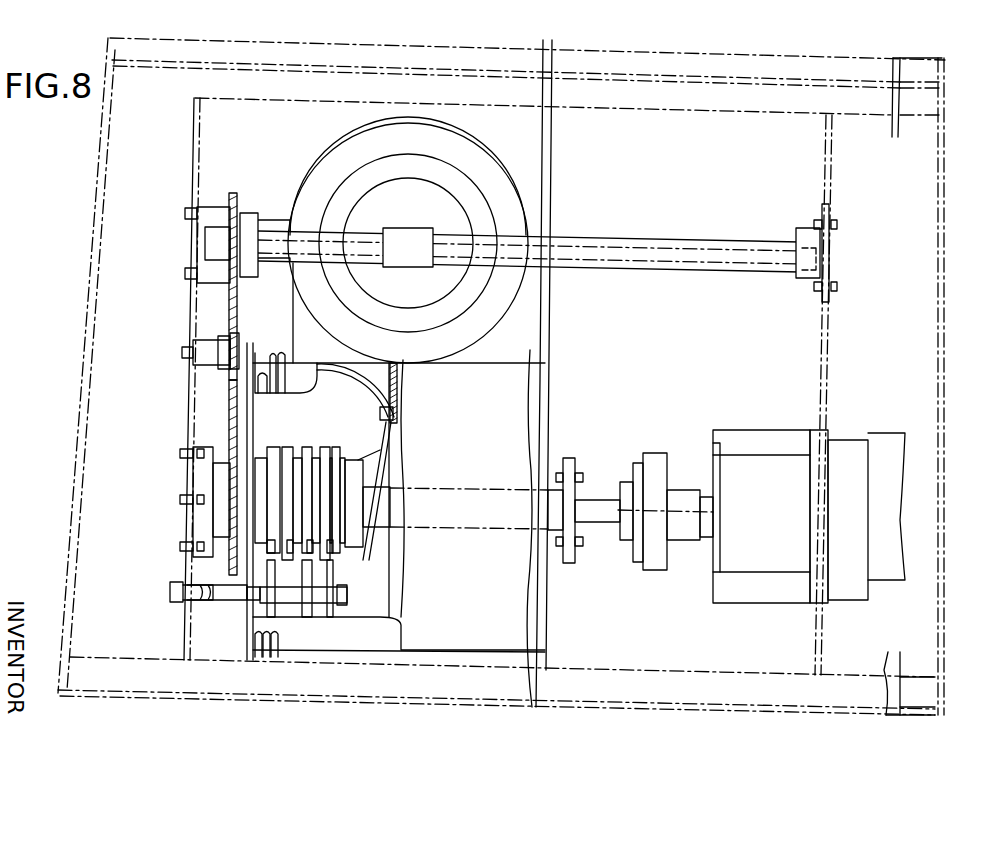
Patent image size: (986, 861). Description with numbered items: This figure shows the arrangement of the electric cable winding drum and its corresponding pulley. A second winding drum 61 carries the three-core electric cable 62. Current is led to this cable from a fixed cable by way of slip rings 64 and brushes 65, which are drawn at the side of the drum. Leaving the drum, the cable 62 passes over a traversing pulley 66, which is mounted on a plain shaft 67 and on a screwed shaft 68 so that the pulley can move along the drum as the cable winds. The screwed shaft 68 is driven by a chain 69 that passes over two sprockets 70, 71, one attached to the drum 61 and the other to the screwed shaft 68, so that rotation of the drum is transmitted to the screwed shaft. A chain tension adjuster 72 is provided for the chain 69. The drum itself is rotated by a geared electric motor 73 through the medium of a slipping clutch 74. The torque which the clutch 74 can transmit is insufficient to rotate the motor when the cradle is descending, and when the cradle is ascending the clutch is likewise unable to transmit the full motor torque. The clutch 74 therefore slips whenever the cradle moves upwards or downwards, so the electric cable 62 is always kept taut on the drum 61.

The second winding drum 61 is at (501, 376).
The three-core electric cable 62 is at (273, 352).
The slip rings 64 is at (285, 555).
The brushes 65 is at (290, 612).
The traversing pulley 66 is at (488, 170).
The plain shaft 67 is at (268, 215).
The screwed shaft 68 is at (538, 262).
The chain 69 is at (226, 300).
The sprocket 70 is at (226, 566).
The sprocket 71 is at (235, 197).
The chain tension adjuster 72 is at (226, 363).
The geared electric motor 73 is at (809, 516).
The slipping clutch 74 is at (653, 456).